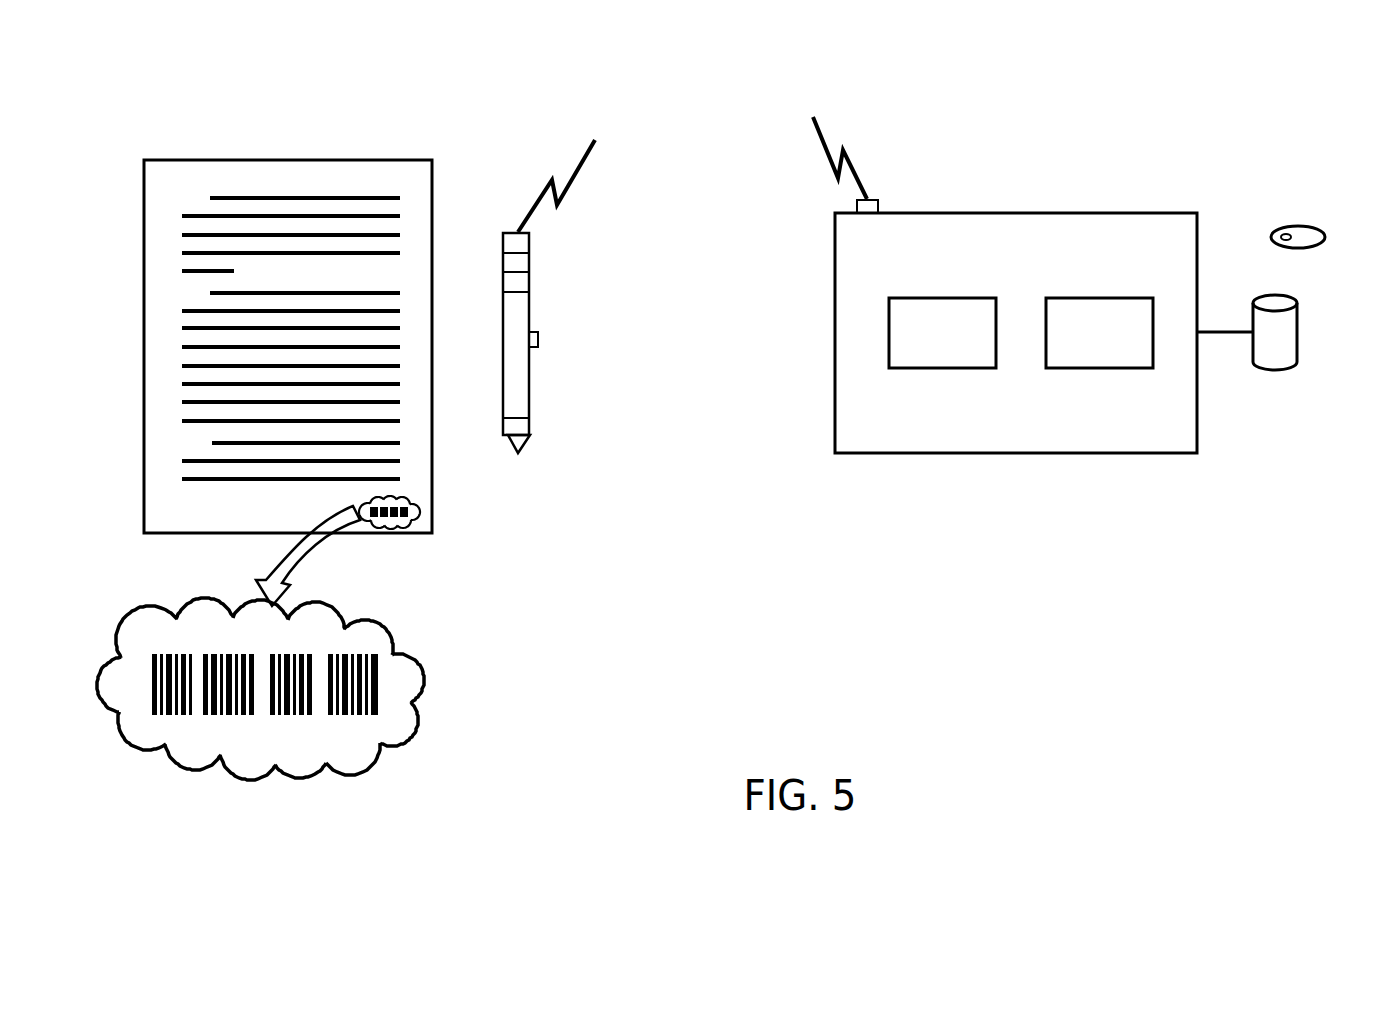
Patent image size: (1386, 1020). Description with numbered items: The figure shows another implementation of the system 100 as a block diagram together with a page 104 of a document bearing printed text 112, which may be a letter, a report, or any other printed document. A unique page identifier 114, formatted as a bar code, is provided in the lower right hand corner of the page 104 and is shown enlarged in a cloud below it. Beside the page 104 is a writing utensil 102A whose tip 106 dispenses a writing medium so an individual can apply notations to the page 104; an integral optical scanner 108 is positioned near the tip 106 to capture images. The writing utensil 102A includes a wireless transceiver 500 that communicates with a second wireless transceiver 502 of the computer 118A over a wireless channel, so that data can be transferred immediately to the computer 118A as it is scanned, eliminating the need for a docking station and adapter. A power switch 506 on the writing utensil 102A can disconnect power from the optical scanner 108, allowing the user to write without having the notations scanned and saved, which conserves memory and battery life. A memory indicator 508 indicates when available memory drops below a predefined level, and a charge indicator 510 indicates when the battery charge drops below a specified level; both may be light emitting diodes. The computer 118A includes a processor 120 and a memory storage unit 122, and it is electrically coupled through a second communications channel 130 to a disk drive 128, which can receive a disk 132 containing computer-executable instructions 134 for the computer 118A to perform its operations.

The system 100 is at (738, 82).
The writing utensil 102A is at (576, 309).
The page 104 is at (201, 177).
The tip 106 is at (525, 443).
The optical scanner 108 is at (503, 423).
The text 112 is at (276, 334).
The page identifier 114 is at (158, 626).
The computer 118A is at (1005, 312).
The processor 120 is at (942, 333).
The memory storage unit 122 is at (1099, 333).
The disk drive 128 is at (1297, 331).
The second communications channel 130 is at (1228, 335).
The disk 132 is at (1298, 207).
The computer-executable instructions 134 is at (1287, 230).
The wireless transceiver 500 is at (530, 240).
The second wireless transceiver 502 is at (880, 206).
The power switch 506 is at (538, 340).
The memory indicator 508 is at (530, 265).
The charge indicator 510 is at (530, 283).